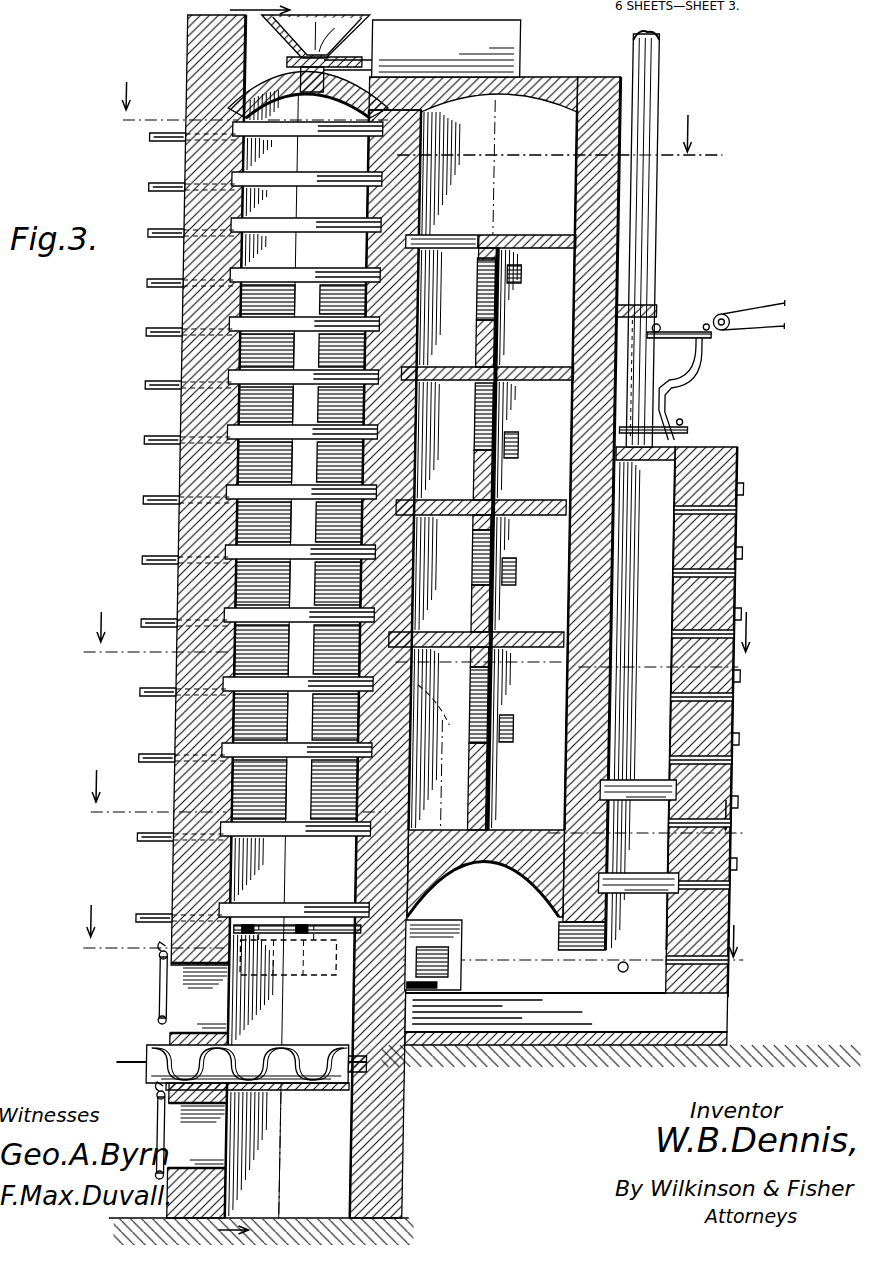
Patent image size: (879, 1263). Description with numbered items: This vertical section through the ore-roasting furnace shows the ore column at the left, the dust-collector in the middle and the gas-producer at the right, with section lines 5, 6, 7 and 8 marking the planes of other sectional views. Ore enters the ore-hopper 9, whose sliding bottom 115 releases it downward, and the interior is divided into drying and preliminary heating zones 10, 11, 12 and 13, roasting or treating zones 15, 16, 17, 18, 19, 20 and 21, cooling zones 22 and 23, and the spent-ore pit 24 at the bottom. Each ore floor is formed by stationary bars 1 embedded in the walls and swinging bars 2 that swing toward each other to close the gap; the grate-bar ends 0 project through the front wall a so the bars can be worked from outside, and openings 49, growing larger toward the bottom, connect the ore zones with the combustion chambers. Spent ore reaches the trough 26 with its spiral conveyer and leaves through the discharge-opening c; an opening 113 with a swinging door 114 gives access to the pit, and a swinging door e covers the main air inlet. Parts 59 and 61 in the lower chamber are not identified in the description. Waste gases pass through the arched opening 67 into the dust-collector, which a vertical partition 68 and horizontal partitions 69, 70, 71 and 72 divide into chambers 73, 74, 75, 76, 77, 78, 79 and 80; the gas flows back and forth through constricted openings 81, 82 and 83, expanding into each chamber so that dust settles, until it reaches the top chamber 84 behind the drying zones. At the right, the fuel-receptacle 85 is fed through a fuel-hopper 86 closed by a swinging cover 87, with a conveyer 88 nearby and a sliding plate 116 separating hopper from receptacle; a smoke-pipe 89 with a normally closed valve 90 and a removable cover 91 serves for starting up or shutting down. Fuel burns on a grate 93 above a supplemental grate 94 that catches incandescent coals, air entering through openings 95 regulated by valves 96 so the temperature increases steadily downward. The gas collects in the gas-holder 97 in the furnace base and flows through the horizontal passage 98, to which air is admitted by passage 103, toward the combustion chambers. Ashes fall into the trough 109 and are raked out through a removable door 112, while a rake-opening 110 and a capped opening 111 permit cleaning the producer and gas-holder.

The stationary bars 1 is at (248, 180).
The swinging bars 2 is at (152, 293).
The front wall a is at (190, 232).
The grate-bar ends 0 is at (178, 284).
The section line 5 5 is at (430, 647).
The section line 6 6 is at (425, 809).
The section line 7 7 is at (427, 942).
The section line 8 8 is at (413, 127).
The ore-hopper 9 is at (330, 34).
The drying and preliminary heating zone 10 is at (308, 98).
The drying and preliminary heating zone 11 is at (307, 154).
The drying and preliminary heating zone 12 is at (306, 210).
The drying and preliminary heating zone 13 is at (305, 258).
The roasting or treating zone 15 is at (245, 368).
The roasting or treating zone 16 is at (245, 420).
The roasting or treating zone 17 is at (245, 482).
The roasting or treating zone 18 is at (245, 542).
The roasting or treating zone 19 is at (245, 585).
The roasting or treating zone 20 is at (245, 650).
The roasting or treating zone 21 is at (242, 733).
The cooling zone 22 is at (306, 815).
The cooling zone 23 is at (295, 869).
The spent-ore pit 24 is at (303, 925).
The trough 26 is at (156, 1072).
The openings 49 is at (248, 336).
The discharge device 59 is at (322, 966).
The discharge chamber 61 is at (300, 948).
The arched opening 67 is at (439, 787).
The vertical partition 68 is at (500, 826).
The horizontal partition 69 is at (445, 640).
The horizontal partition 70 is at (532, 512).
The horizontal partition 71 is at (452, 367).
The horizontal partition 72 is at (541, 236).
The dust-collector chamber 73 is at (441, 694).
The dust-collector chamber 74 is at (526, 711).
The dust-collector chamber 75 is at (530, 561).
The dust-collector chamber 76 is at (442, 573).
The dust-collector chamber 77 is at (534, 433).
The dust-collector chamber 78 is at (444, 440).
The dust-collector chamber 79 is at (447, 308).
The dust-collector chamber 80 is at (536, 292).
The opening 81 is at (490, 738).
The opening 82 is at (546, 640).
The opening 83 is at (488, 572).
The top chamber 84 is at (498, 173).
The fuel-receptacle 85 is at (641, 705).
The fuel-hopper 86 is at (712, 374).
The swinging cover 87 is at (688, 333).
The conveyer 88 is at (749, 303).
The smoke-pipe 89 is at (662, 222).
The movable valve 90 is at (663, 311).
The removable cover 91 is at (660, 290).
The grate 93 is at (646, 784).
The supplemental grate 94 is at (646, 880).
The air-admission openings 95 is at (712, 508).
The valve 96 is at (752, 512).
The gas-holder 97 is at (536, 955).
The horizontal passage 98 is at (480, 930).
The air passage 103 is at (445, 950).
The ash trough 109 is at (566, 1012).
The rake-opening 110 is at (631, 982).
The capped opening 111 is at (458, 983).
The removable door 112 is at (744, 1024).
The opening 113 is at (182, 1000).
The swinging door 114 is at (176, 996).
The sliding bottom 115 is at (360, 40).
The sliding plate 116 is at (682, 427).
The discharge-opening c is at (166, 1050).
The swinging door e is at (178, 1118).